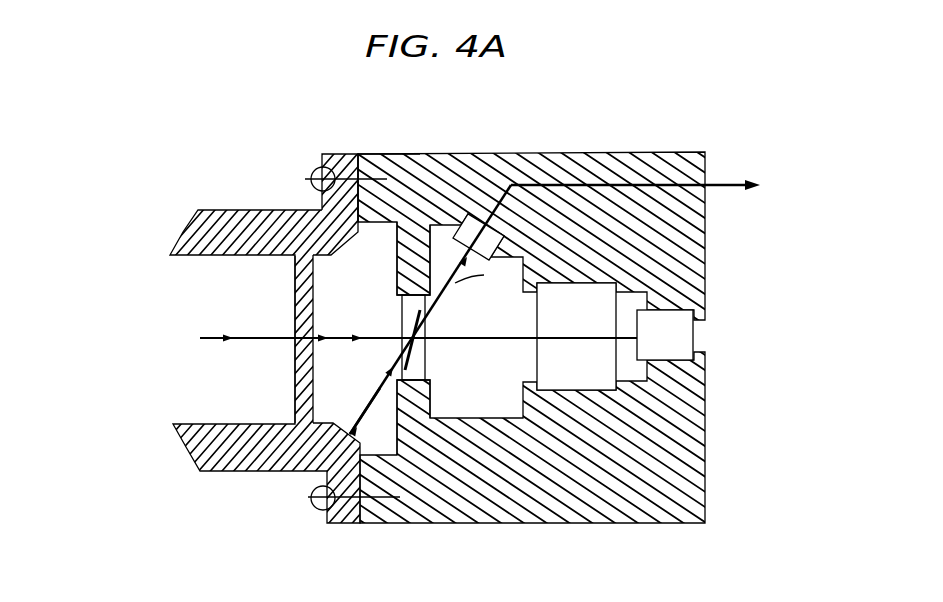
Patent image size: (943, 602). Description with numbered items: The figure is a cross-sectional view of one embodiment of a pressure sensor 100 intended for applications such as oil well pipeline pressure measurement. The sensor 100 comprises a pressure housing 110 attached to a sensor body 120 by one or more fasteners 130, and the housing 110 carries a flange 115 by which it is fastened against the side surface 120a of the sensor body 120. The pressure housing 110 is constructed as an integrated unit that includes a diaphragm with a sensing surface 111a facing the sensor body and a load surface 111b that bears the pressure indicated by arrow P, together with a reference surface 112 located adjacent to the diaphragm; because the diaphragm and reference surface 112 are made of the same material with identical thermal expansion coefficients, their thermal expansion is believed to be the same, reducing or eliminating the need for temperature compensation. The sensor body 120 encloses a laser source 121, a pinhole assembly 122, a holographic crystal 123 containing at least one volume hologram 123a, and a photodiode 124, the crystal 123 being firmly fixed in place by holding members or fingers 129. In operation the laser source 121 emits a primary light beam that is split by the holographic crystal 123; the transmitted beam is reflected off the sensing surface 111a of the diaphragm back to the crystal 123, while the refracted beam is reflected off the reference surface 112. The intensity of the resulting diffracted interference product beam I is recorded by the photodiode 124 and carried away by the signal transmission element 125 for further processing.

The pressure sensor 100 is at (158, 134).
The pressure housing 110 is at (210, 427).
The sensing surface 111a is at (322, 313).
The load surface 111b is at (293, 392).
The reference surface 112 is at (350, 433).
The flange 115 is at (322, 158).
The sensor body 120 is at (597, 505).
The side surface 120a is at (358, 155).
The laser source 121 is at (680, 338).
The pinhole assembly 122 is at (590, 288).
The holographic crystal 123 is at (420, 370).
The volume hologram 123a is at (423, 320).
The photodiode 124 is at (478, 220).
The signal transmission element 125 is at (730, 183).
The holding members or fingers 129 is at (410, 267).
The fastener 130 is at (305, 178).